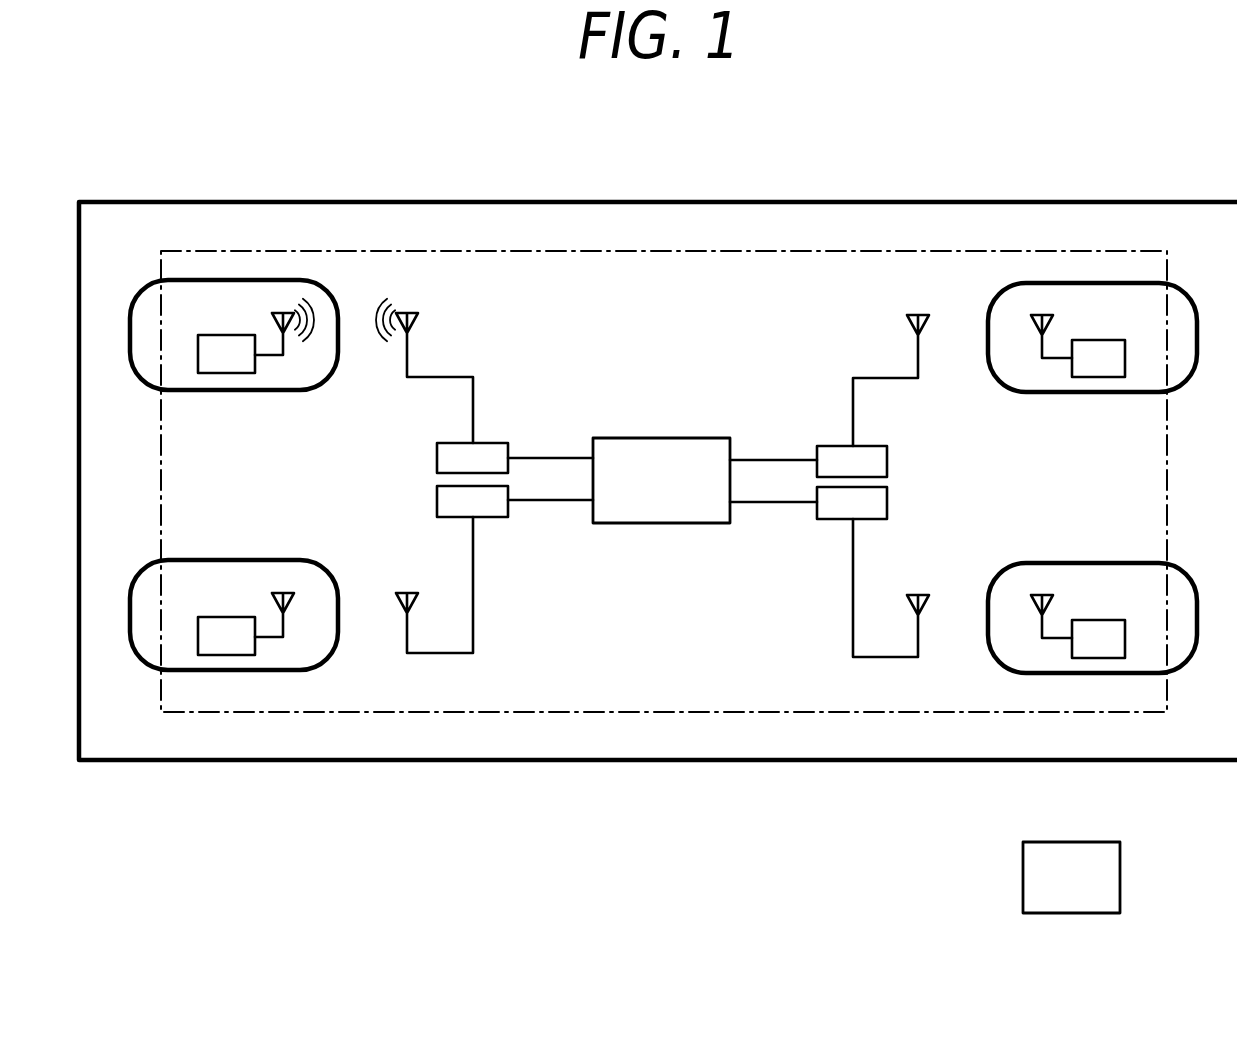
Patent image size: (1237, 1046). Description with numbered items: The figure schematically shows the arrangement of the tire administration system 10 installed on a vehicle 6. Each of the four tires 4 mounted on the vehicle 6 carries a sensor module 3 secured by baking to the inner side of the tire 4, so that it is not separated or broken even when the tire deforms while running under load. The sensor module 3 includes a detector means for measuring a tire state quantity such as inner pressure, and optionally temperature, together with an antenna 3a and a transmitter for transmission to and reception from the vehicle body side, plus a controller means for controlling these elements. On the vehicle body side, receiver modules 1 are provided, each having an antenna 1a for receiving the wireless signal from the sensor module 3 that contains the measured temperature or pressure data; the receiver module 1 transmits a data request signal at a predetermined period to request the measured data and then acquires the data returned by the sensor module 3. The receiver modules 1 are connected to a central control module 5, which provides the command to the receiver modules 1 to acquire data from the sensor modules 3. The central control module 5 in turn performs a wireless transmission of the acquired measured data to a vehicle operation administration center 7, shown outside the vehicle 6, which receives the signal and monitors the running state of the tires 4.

The receiver module 1 is at (504, 441).
The antenna 1a is at (919, 314).
The sensor module 3 is at (230, 373).
The antenna 3a is at (1046, 315).
The tire 4 is at (200, 280).
The central control module 5 is at (660, 438).
The vehicle 6 is at (932, 202).
The vehicle operation administration center 7 is at (1023, 872).
The tire administration system 10 is at (658, 250).